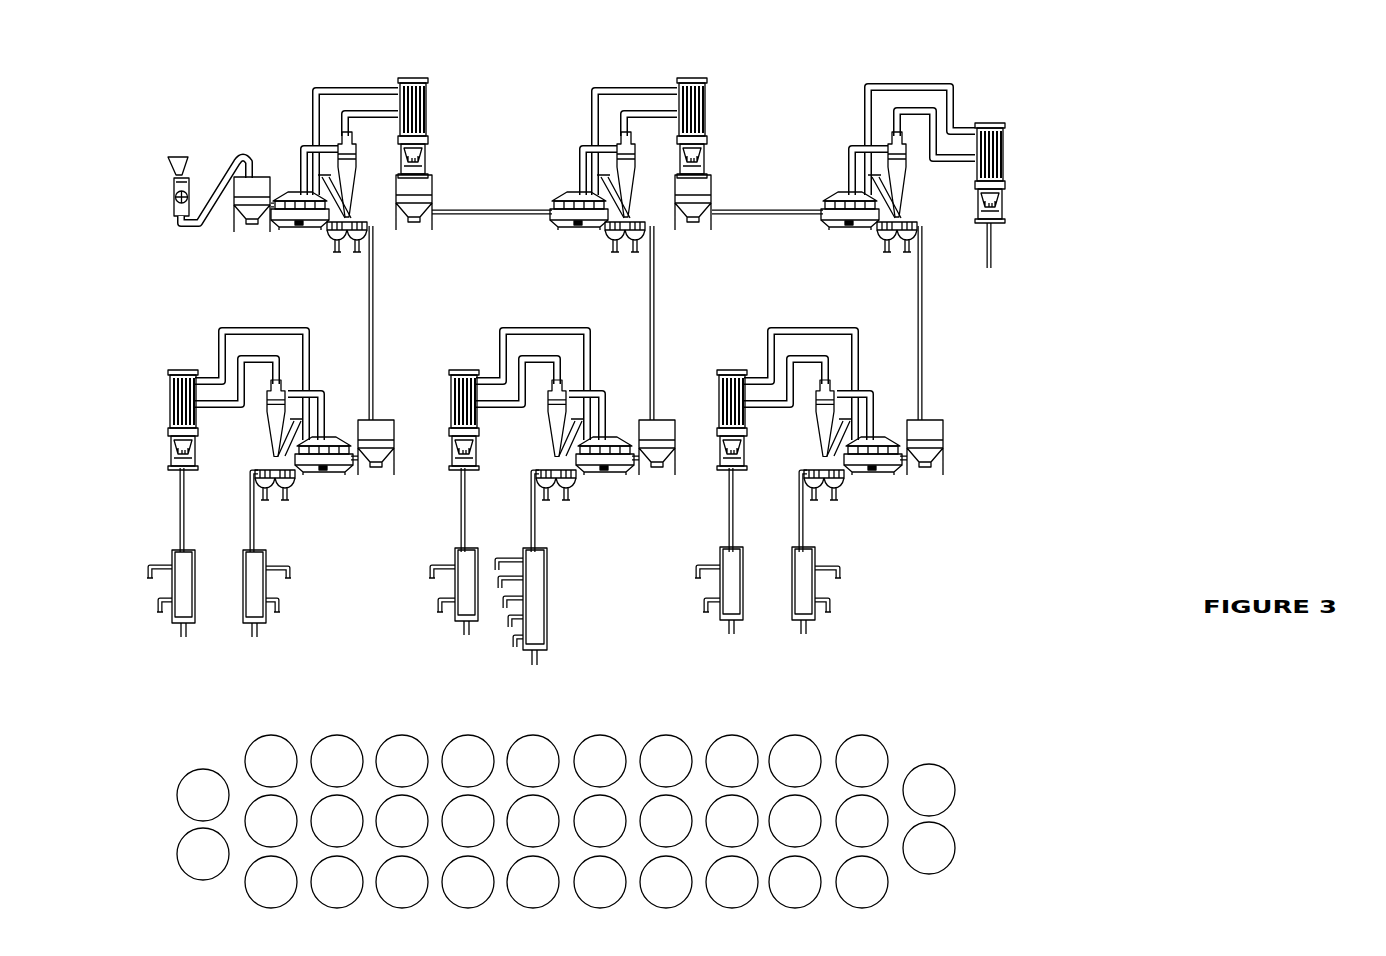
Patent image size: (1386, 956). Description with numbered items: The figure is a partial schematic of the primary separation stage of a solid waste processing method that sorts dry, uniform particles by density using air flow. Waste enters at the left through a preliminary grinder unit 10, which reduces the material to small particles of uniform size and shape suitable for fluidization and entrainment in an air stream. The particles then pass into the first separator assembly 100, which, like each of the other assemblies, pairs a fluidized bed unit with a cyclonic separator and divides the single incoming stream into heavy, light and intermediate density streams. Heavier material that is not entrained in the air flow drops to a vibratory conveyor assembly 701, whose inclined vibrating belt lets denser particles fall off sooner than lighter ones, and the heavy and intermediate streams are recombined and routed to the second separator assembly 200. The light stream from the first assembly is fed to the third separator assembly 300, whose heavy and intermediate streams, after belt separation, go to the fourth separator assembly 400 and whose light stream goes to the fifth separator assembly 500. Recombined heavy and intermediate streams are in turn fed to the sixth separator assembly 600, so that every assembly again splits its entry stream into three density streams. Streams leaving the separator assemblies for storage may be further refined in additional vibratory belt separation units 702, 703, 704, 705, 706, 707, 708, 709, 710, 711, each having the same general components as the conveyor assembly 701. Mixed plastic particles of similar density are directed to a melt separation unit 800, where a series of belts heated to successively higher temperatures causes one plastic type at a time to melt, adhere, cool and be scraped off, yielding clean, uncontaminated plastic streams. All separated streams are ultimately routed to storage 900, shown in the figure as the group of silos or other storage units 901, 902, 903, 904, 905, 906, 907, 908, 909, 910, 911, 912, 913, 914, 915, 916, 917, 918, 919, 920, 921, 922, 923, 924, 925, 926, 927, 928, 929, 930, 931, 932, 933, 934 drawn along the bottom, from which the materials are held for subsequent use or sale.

The preliminary grinder unit 10 is at (172, 193).
The first separator assembly 100 is at (304, 138).
The second separator assembly 200 is at (316, 374).
The third separator assembly 300 is at (584, 135).
The fourth separator assembly 400 is at (595, 375).
The fifth separator assembly 500 is at (963, 118).
The sixth separator assembly 600 is at (864, 377).
The vibratory conveyor assembly 701 is at (325, 243).
The vibratory belt separation unit 702 is at (293, 492).
The vibratory belt separation unit 703 is at (640, 258).
The vibratory belt separation unit 704 is at (573, 490).
The vibratory belt separation unit 705 is at (876, 243).
The vibratory belt separation unit 706 is at (840, 490).
The vibratory belt separation unit 707 is at (172, 555).
The vibratory belt separation unit 708 is at (265, 553).
The vibratory belt separation unit 709 is at (455, 548).
The vibratory belt separation unit 710 is at (718, 548).
The vibratory belt separation unit 711 is at (815, 550).
The melt separation unit 800 is at (535, 580).
The product receiving station system 900 is at (345, 253).
The storage unit 901 is at (203, 795).
The storage unit 902 is at (271, 761).
The storage unit 903 is at (337, 761).
The storage unit 904 is at (402, 761).
The storage unit 905 is at (468, 761).
The storage unit 906 is at (533, 761).
The storage unit 907 is at (600, 761).
The storage unit 908 is at (666, 761).
The storage unit 909 is at (732, 761).
The storage unit 910 is at (795, 761).
The storage unit 911 is at (862, 761).
The storage unit 912 is at (929, 790).
The storage unit 913 is at (271, 821).
The storage unit 914 is at (337, 821).
The storage unit 915 is at (402, 821).
The storage unit 916 is at (468, 821).
The storage unit 917 is at (533, 821).
The storage unit 918 is at (600, 821).
The storage unit 919 is at (666, 821).
The storage unit 920 is at (732, 821).
The storage unit 921 is at (795, 821).
The storage unit 922 is at (862, 821).
The storage unit 923 is at (929, 848).
The storage unit 924 is at (203, 854).
The storage unit 925 is at (271, 882).
The storage unit 926 is at (337, 882).
The storage unit 927 is at (402, 882).
The storage unit 928 is at (468, 882).
The storage unit 929 is at (533, 882).
The storage unit 930 is at (600, 882).
The storage unit 931 is at (666, 882).
The storage unit 932 is at (732, 882).
The storage unit 933 is at (795, 882).
The storage unit 934 is at (862, 882).